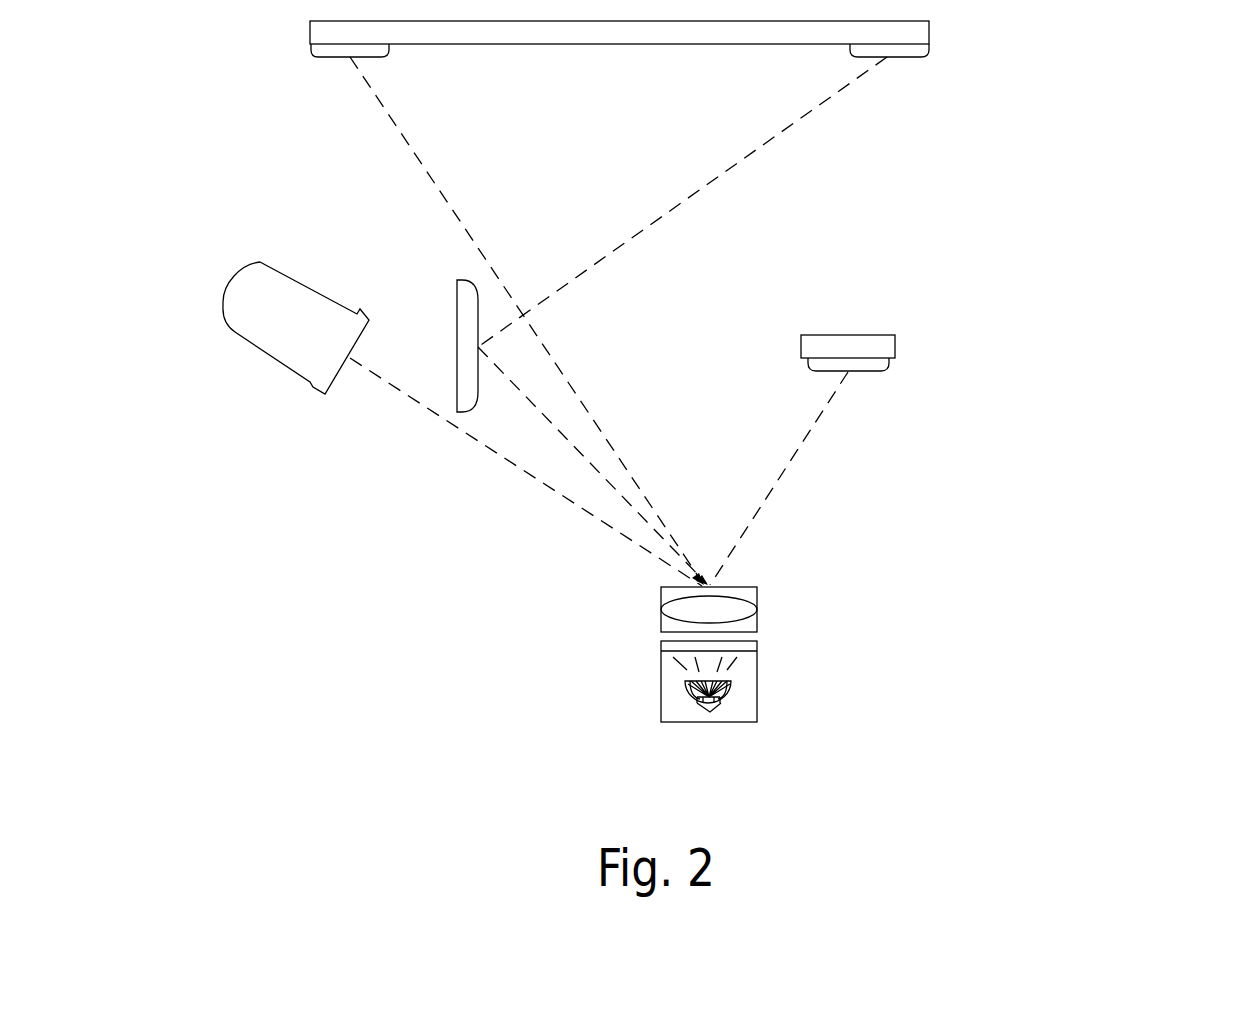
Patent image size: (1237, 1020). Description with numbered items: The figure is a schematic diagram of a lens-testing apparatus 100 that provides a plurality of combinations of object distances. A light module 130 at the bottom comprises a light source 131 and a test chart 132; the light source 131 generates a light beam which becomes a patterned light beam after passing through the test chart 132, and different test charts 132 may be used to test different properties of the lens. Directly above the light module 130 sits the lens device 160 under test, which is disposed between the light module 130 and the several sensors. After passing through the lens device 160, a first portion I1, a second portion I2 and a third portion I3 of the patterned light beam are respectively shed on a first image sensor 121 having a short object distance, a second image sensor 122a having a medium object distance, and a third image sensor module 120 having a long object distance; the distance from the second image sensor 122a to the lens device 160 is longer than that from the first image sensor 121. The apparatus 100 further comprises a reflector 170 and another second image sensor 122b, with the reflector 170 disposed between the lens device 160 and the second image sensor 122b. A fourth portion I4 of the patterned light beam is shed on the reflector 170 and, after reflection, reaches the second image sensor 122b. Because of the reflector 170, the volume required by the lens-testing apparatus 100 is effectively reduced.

The lens-testing apparatus 100 is at (1198, 94).
The third image sensor module 120 is at (264, 272).
The first image sensor 121 is at (877, 363).
The second image sensor 122a is at (321, 53).
The second image sensor 122b is at (917, 53).
The light module 130 is at (720, 677).
The light source 131 is at (686, 682).
The test chart 132 is at (661, 642).
The lens device 160 is at (757, 615).
The reflector 170 is at (462, 394).
The first portion of the patterned light beam I1 is at (779, 478).
The second portion of the patterned light beam I2 is at (527, 321).
The third portion of the patterned light beam I3 is at (526, 472).
The fourth portion of the patterned light beam I4 is at (682, 202).